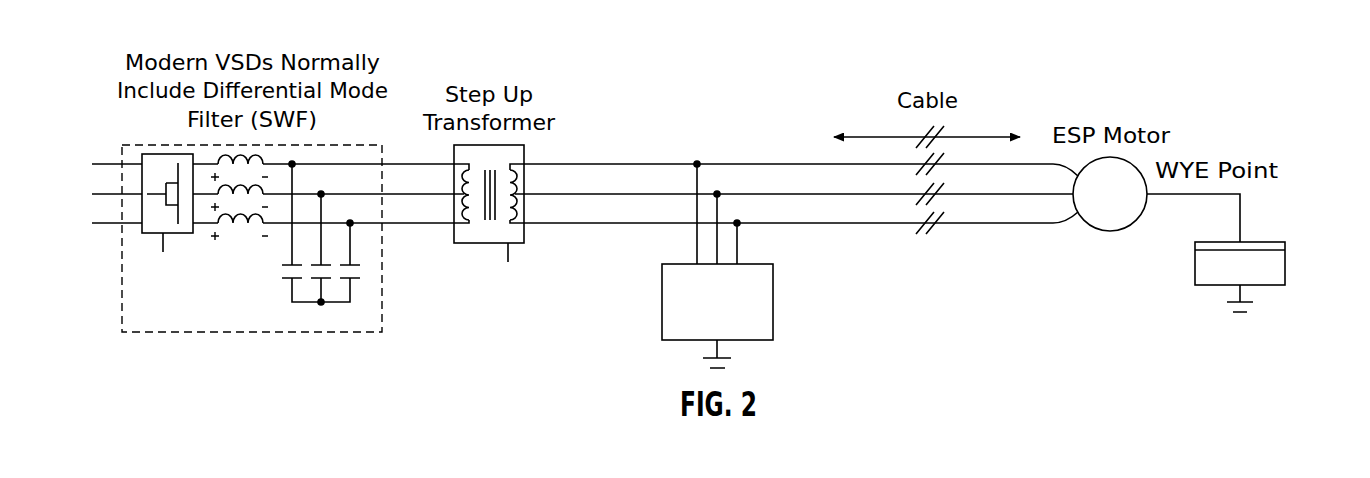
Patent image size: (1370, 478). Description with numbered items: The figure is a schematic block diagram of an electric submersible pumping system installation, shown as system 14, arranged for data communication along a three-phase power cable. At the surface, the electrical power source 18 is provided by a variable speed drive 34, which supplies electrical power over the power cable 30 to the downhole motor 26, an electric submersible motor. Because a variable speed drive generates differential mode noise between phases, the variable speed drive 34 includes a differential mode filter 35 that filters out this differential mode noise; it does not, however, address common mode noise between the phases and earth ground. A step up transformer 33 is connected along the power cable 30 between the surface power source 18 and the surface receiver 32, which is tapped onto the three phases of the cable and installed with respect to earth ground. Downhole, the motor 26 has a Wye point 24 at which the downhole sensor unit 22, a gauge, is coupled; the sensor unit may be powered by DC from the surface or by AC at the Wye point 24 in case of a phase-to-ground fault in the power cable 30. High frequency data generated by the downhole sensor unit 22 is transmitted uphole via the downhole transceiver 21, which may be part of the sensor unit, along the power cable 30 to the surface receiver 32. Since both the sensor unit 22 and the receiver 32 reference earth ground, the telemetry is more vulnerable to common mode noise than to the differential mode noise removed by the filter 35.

The system 14 is at (1131, 158).
The electrical power source 18 is at (115, 123).
The downhole transceiver 21 is at (1258, 242).
The downhole sensor unit 22 is at (1272, 262).
The Wye point 24 is at (1148, 197).
The downhole motor 26 is at (1108, 232).
The power cable 30 is at (964, 79).
The surface receiver 32 is at (680, 264).
The step up transformer 33 is at (472, 243).
The variable speed drive 34 is at (152, 332).
The differential mode filter 35 is at (250, 290).